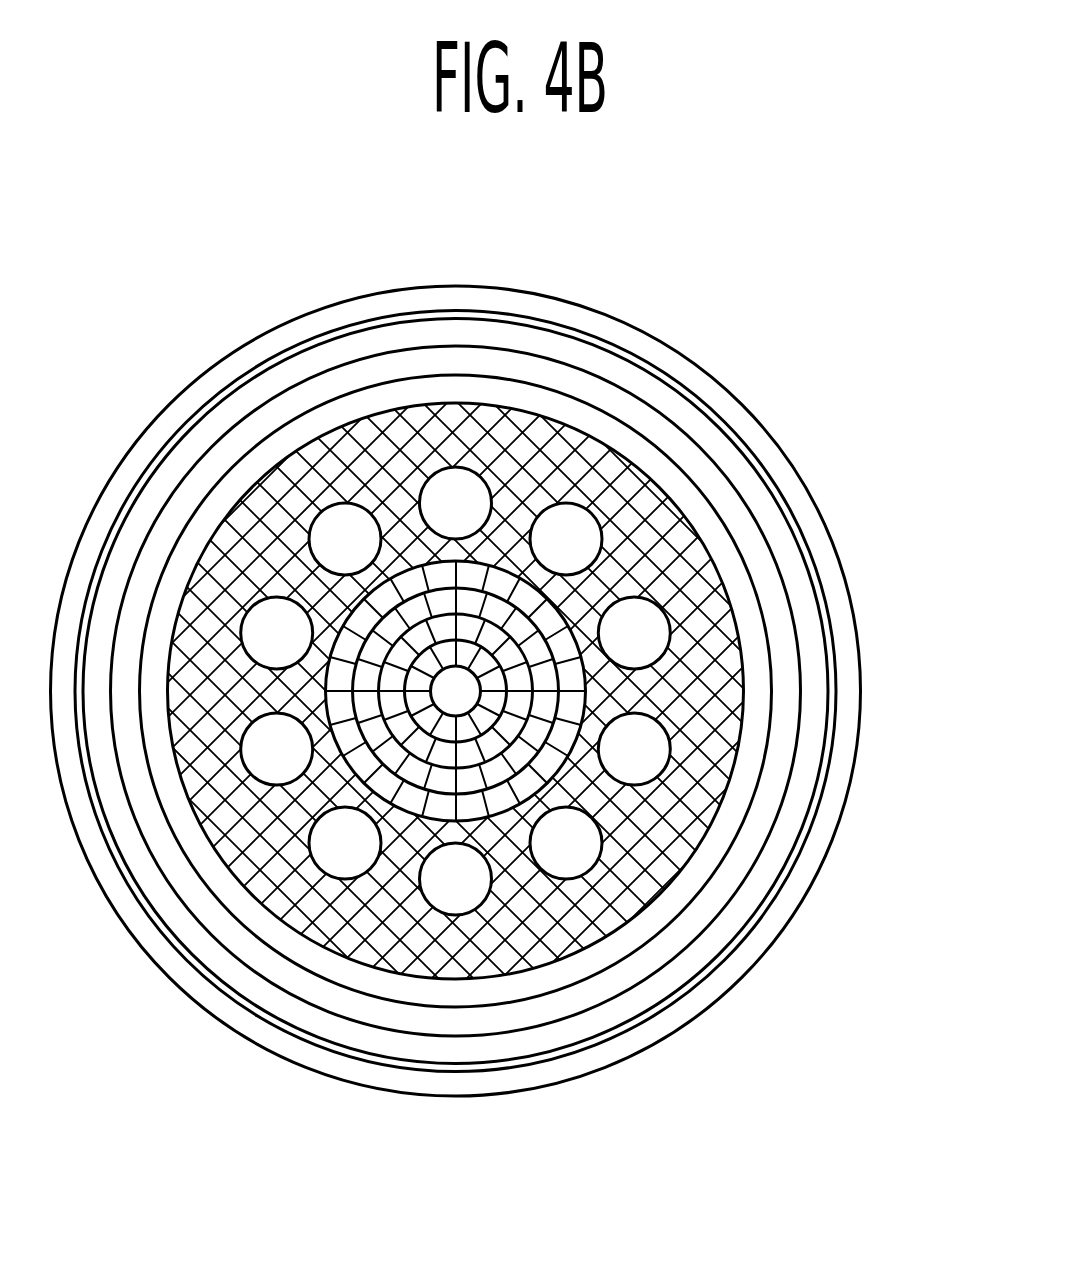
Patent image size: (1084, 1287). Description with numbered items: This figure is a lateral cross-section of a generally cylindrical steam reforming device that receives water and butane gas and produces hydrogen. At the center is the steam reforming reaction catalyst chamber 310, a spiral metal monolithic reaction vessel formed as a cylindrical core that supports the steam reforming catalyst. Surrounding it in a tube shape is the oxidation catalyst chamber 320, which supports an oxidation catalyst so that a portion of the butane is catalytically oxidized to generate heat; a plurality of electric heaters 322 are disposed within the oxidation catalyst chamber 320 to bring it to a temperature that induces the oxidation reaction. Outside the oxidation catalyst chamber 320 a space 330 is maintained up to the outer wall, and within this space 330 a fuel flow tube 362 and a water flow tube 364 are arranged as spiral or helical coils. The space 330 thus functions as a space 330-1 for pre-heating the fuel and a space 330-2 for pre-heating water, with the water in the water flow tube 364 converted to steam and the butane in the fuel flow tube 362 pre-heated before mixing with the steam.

The steam reforming reaction catalyst chamber 310 is at (518, 653).
The oxidation catalyst chamber 320 is at (707, 686).
The electric heaters 322 is at (645, 627).
The space 330 is at (847, 812).
The space for pre-heating a fuel 330-1 is at (618, 363).
The space for pre-heating water 330-2 is at (683, 357).
The fuel flow tube 362 is at (712, 903).
The water flow tube 364 is at (800, 855).